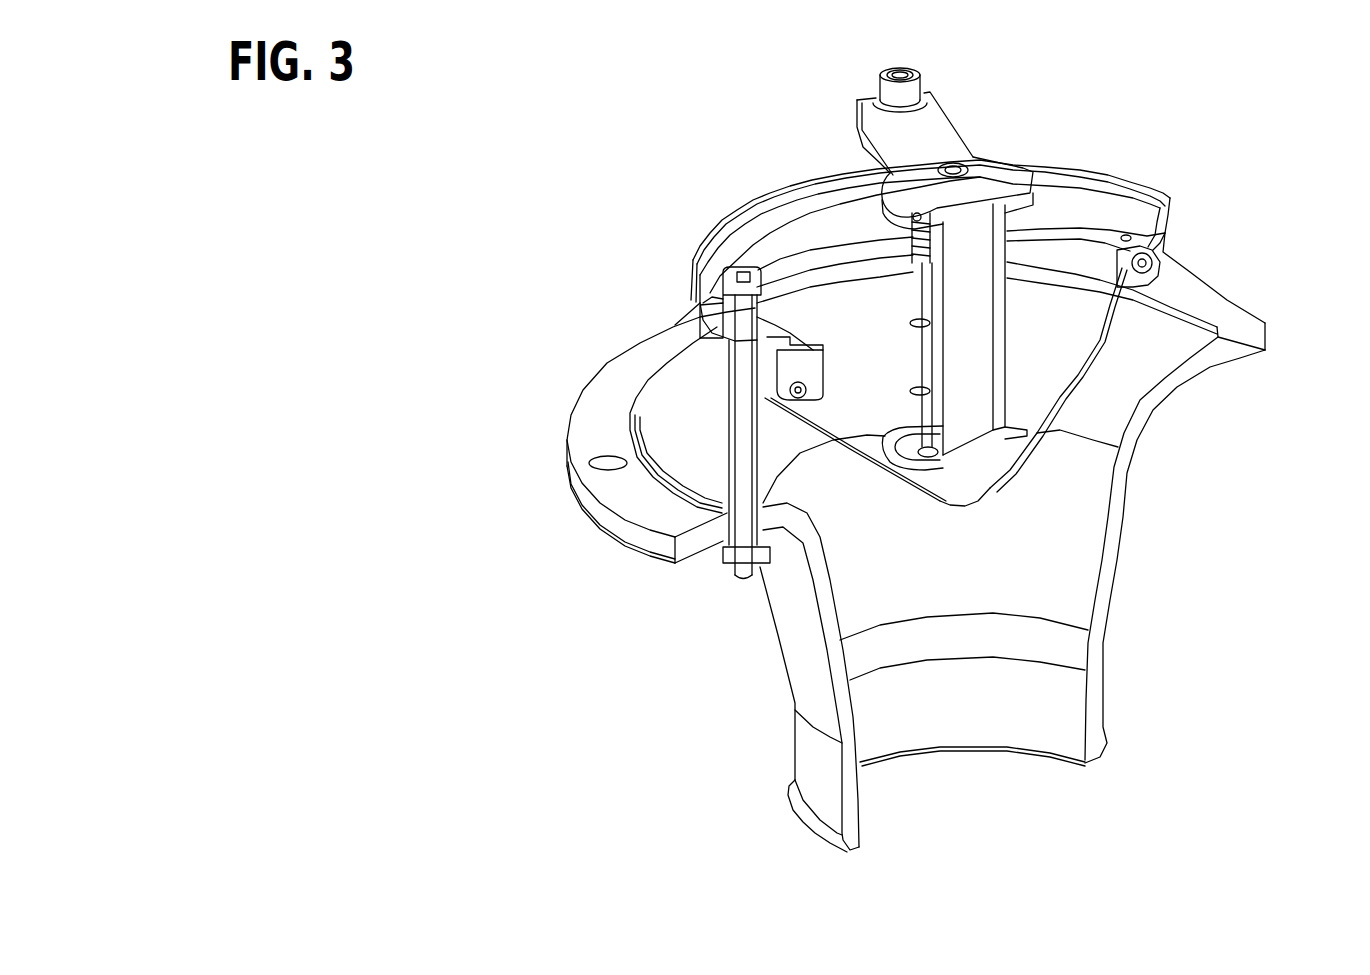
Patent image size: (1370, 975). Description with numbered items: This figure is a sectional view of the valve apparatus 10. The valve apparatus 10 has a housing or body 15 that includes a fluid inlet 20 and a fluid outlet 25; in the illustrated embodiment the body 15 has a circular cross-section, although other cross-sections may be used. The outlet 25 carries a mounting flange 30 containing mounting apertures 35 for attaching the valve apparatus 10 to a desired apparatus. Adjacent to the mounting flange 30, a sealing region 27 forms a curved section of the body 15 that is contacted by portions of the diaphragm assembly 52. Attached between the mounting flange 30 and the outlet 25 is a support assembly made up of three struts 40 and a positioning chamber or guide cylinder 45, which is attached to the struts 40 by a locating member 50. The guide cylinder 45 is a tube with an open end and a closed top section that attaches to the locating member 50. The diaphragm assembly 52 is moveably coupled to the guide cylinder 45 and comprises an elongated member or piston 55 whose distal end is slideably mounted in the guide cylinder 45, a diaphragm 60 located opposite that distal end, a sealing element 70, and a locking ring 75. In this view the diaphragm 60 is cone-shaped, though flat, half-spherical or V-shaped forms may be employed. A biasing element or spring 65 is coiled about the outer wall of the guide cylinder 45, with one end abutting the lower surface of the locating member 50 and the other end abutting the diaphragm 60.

The valve apparatus 10 is at (522, 263).
The body 15 is at (991, 582).
The fluid inlet 20 is at (941, 772).
The fluid outlet 25 is at (948, 532).
The sealing region 27 is at (1174, 316).
The mounting flange 30 is at (622, 383).
The mounting apertures 35 is at (511, 461).
The struts 40 is at (673, 439).
The guide cylinder 45 is at (1000, 129).
The locating member 50 is at (908, 140).
The diaphragm assembly 52 is at (1112, 103).
The piston 55 is at (988, 365).
The diaphragm 60 is at (1068, 345).
The spring 65 is at (894, 341).
The sealing element 70 is at (1134, 345).
The locking ring 75 is at (1210, 181).